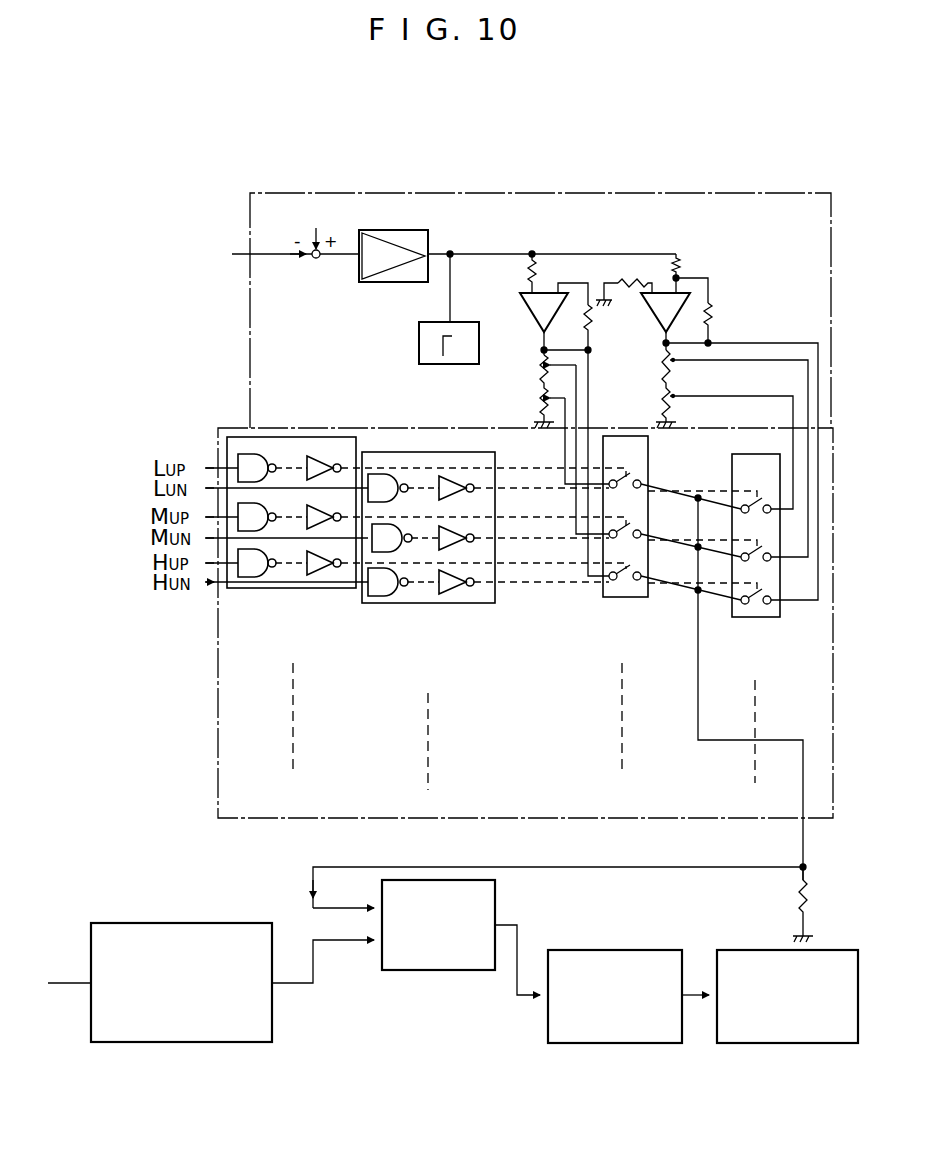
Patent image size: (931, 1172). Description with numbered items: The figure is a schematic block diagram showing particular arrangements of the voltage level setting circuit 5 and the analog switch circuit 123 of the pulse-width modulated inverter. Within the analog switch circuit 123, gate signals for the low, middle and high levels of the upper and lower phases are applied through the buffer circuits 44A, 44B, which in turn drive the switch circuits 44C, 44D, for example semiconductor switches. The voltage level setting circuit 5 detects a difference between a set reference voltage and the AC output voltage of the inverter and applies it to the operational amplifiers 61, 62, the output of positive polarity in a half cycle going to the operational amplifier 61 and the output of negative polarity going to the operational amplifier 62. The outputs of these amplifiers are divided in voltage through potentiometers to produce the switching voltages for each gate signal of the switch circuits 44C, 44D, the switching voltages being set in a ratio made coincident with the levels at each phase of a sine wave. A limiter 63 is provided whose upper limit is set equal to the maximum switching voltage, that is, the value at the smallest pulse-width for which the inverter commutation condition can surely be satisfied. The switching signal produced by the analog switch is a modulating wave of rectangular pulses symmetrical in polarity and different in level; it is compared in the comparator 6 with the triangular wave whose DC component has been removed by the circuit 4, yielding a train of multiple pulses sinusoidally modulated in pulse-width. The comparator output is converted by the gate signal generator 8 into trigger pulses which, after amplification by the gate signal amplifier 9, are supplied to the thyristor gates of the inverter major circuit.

The circuit for cutting off the DC component of the triangular wave 4 is at (188, 1042).
The voltage level setting circuit 5 is at (250, 357).
The comparator 6 is at (412, 972).
The gate signal generator 8 is at (617, 1043).
The gate signal amplifier 9 is at (767, 1043).
The operational amplifier 61 is at (536, 318).
The operational amplifier 62 is at (658, 324).
The limiter 63 is at (419, 350).
The buffer circuit 44A is at (298, 437).
The buffer circuit 44B is at (484, 456).
The switch circuit 44C is at (655, 446).
The switch circuit 44D is at (735, 460).
The analog switch circuit 123 is at (218, 757).